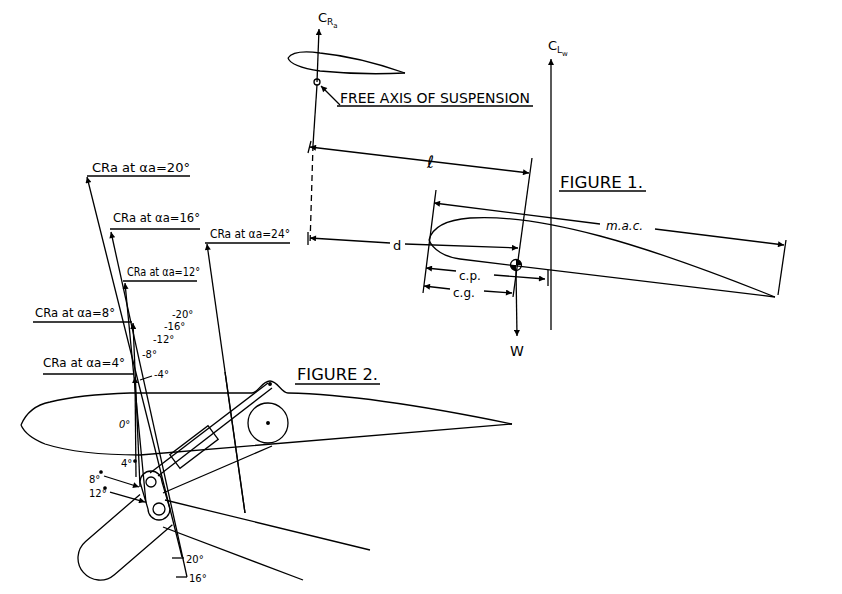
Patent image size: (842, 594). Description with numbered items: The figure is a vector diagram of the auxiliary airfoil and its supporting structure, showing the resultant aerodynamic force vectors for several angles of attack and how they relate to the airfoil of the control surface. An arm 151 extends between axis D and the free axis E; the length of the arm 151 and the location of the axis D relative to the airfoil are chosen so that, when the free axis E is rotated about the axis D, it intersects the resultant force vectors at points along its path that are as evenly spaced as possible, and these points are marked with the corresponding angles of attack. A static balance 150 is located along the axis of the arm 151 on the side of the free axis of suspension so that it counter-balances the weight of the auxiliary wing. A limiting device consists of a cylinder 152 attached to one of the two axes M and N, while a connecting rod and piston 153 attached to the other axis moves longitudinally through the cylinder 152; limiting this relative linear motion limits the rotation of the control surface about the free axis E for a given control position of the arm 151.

The static balance 150 is at (130, 556).
The arm 151 is at (241, 480).
The cylinder 152 is at (198, 458).
The connecting rod and piston 153 is at (236, 462).
The axis M is at (143, 466).
The free axis E is at (176, 546).
The axis N is at (269, 382).
The axis D is at (268, 423).